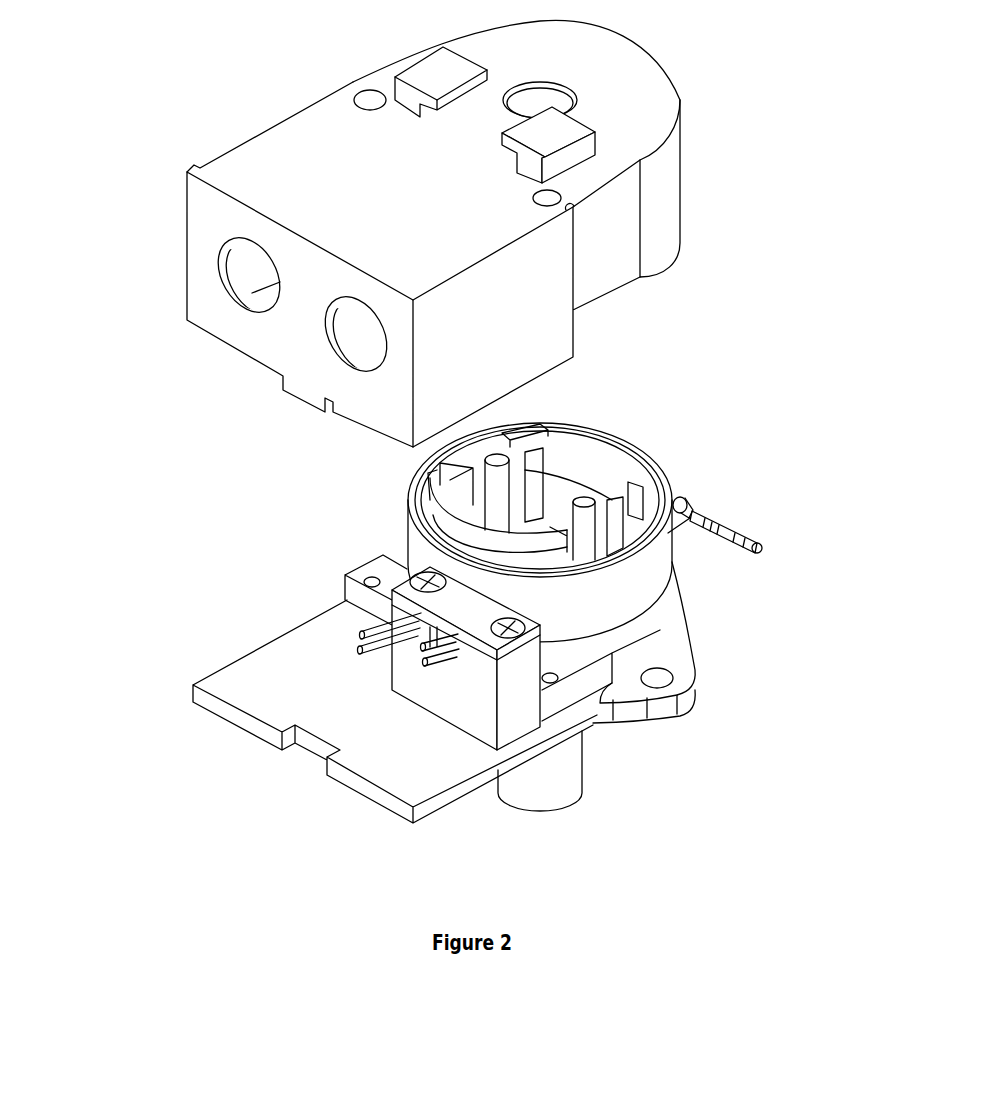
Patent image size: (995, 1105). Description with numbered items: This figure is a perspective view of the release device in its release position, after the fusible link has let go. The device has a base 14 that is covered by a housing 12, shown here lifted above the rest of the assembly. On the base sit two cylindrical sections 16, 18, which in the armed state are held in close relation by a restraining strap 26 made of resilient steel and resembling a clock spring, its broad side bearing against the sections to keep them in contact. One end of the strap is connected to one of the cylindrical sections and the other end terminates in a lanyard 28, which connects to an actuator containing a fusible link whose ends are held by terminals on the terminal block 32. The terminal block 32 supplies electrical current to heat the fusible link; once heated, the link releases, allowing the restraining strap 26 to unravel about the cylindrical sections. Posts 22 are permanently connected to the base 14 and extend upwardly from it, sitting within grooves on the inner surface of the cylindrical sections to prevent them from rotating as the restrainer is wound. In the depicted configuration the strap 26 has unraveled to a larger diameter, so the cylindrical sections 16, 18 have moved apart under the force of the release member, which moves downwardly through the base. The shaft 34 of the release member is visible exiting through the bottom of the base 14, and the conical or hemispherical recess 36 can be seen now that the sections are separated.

The housing 12 is at (189, 264).
The base 14 is at (668, 626).
The cylindrical section 16 is at (417, 495).
The cylindrical section 18 is at (637, 476).
The posts 22 is at (504, 447).
The restraining strap 26 is at (698, 481).
The lanyard 28 is at (764, 530).
The terminal block 32 is at (385, 605).
The shaft 34 is at (575, 783).
The recess 36 is at (586, 438).